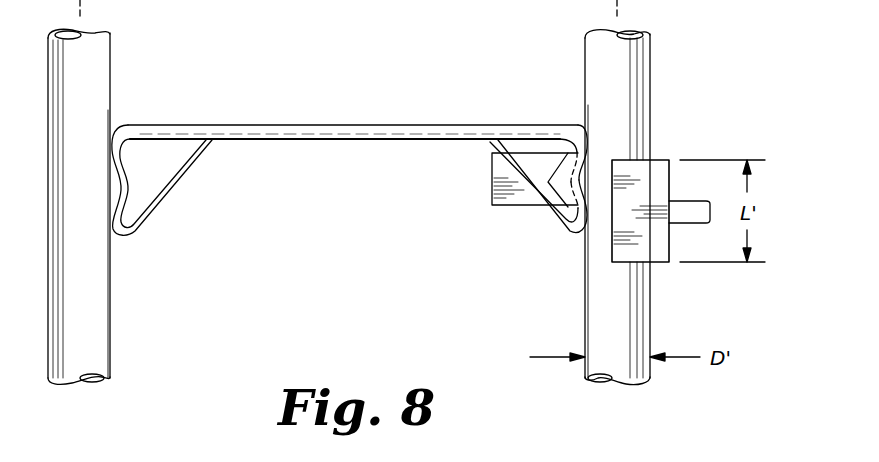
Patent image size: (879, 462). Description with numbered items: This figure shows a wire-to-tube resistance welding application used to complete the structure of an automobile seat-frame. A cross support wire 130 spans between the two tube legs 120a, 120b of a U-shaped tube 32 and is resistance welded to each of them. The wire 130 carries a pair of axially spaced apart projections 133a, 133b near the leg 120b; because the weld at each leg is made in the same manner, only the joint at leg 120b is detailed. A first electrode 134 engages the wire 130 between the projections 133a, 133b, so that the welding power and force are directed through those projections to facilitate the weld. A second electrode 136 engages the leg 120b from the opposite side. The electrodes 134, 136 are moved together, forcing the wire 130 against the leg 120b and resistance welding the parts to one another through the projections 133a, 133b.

The tube leg 120a is at (90, 62).
The tube leg 120b is at (643, 107).
The U-shaped tube 32 is at (656, 58).
The cross support wire 130 is at (356, 132).
The projection 133a is at (578, 130).
The projection 133b is at (571, 237).
The first electrode 134 is at (512, 205).
The second electrode 136 is at (654, 165).